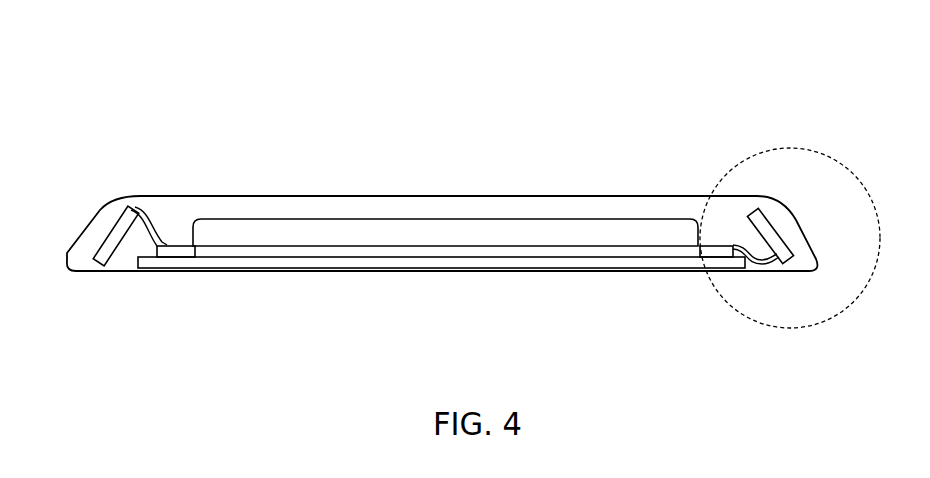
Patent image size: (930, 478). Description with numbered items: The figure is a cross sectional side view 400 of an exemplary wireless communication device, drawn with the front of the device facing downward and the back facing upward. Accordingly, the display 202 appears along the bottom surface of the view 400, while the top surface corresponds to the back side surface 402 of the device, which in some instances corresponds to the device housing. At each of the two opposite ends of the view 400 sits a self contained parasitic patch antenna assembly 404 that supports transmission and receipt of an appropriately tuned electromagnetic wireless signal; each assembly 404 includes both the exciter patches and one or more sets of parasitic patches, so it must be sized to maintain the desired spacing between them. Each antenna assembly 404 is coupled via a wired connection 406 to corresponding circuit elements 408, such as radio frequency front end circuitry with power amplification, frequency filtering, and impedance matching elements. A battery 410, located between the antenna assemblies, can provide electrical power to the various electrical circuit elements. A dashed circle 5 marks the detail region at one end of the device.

The cross sectional side view 400 is at (121, 67).
The back side surface 402 is at (494, 196).
The self contained parasitic patch antenna assembly 404 is at (116, 238).
The wired connection 406 is at (147, 211).
The circuit elements 408 is at (175, 251).
The battery 410 is at (416, 233).
The display 202 is at (441, 270).
The detail region of FIG. 5 is at (790, 148).